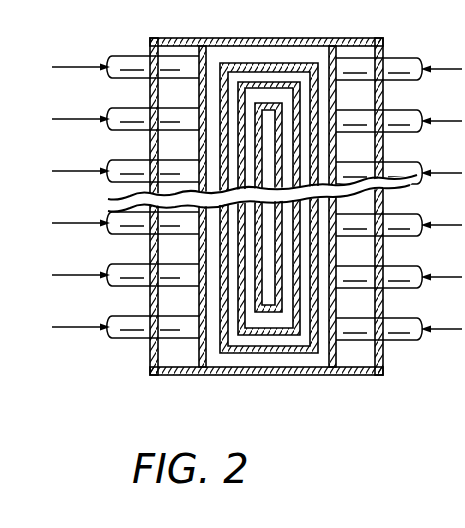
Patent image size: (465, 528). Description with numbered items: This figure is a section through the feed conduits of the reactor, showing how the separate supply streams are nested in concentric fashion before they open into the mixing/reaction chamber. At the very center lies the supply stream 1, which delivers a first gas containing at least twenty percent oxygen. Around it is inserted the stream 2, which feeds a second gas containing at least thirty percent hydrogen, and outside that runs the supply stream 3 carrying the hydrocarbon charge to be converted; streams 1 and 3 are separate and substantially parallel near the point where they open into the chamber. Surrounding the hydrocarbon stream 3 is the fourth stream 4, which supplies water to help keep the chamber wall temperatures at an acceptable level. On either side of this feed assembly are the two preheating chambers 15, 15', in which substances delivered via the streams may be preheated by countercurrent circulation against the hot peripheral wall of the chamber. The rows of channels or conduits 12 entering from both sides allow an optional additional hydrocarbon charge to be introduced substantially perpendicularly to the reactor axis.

The supply stream 1 is at (270, 120).
The stream 2 is at (267, 312).
The supply stream 3 is at (233, 83).
The fourth stream 4 is at (213, 342).
The channels or conduits 12 is at (397, 68).
The preheating chamber 15 is at (364, 228).
The preheating chamber 15' is at (179, 232).